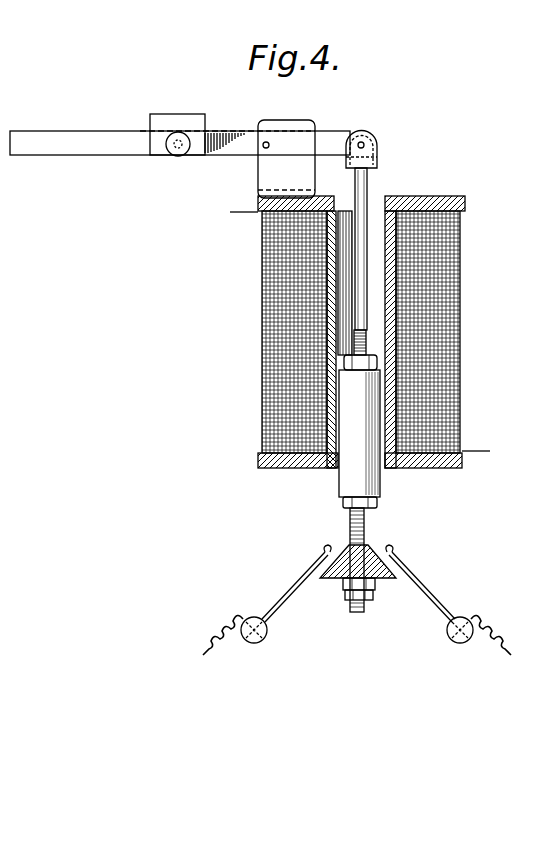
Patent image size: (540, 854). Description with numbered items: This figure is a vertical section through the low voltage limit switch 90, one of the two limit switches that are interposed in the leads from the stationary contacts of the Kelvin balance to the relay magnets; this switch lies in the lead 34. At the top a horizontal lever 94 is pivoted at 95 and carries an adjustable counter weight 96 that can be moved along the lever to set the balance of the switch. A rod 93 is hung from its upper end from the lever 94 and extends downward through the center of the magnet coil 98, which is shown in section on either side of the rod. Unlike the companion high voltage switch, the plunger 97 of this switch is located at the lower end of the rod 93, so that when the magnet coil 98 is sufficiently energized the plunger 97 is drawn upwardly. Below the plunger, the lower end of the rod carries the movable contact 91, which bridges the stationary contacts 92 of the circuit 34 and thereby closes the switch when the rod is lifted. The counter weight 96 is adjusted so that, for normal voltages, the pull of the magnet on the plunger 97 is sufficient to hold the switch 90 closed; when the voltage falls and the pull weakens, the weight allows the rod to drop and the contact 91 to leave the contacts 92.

The lever 94 is at (48, 140).
The adjustable counter weight 96 is at (181, 122).
The pivot 95 is at (267, 142).
The rod 93 is at (364, 193).
The magnet coil 98 is at (447, 337).
The plunger 97 is at (340, 488).
The limit switch 90 is at (358, 576).
The movable contact 91 is at (346, 556).
The stationary contacts 92 is at (303, 582).
The lead 34 is at (212, 635).